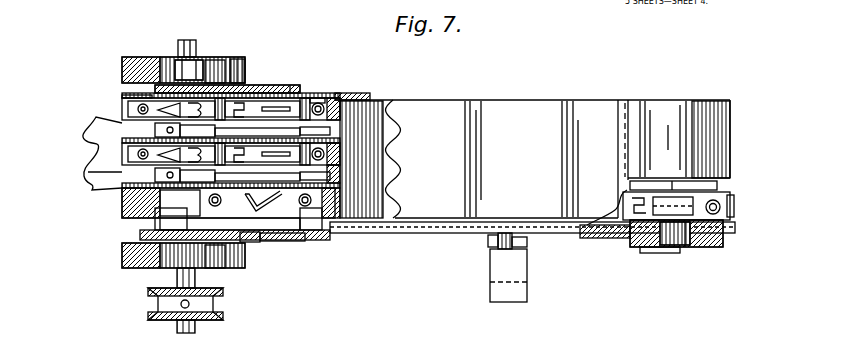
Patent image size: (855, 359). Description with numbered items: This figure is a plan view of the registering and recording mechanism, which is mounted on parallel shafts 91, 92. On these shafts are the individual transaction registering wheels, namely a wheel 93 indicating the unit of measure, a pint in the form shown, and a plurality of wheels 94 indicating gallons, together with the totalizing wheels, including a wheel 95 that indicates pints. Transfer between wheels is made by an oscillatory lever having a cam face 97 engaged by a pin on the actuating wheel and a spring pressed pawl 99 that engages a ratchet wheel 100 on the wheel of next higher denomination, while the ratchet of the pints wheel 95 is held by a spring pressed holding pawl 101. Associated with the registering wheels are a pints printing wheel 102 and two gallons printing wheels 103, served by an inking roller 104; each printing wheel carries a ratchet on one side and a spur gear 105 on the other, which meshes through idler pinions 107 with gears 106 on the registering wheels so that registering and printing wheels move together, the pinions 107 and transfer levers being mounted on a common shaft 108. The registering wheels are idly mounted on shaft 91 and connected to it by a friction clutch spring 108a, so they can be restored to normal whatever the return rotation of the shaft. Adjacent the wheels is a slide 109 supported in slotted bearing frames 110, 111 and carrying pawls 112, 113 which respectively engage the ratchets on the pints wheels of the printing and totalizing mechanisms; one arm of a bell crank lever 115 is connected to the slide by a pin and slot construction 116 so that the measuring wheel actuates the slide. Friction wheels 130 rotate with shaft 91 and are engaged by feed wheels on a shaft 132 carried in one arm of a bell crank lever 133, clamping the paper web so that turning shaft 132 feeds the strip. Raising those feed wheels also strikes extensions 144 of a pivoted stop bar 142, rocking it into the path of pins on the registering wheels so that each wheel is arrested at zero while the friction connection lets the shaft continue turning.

The friction wheels 130 is at (124, 57).
The shaft 132 is at (180, 50).
The oscillatory stop bar 142 is at (202, 58).
The extensions 144 is at (248, 49).
The shaft 108 is at (250, 60).
The idler pinions 107 is at (258, 86).
The cam face 97 is at (292, 86).
The spring pressed pawl 99 is at (312, 93).
The ratchet wheel 100 is at (330, 93).
The gallons printing wheels 103 is at (341, 95).
The spur gear 105 is at (122, 100).
The inking roller 104 is at (435, 87).
The shaft 91 is at (160, 88).
The wheels 94 is at (122, 112).
The bell crank lever 133 is at (90, 143).
The gears 106 is at (86, 172).
The wheel 93 is at (122, 214).
The spring 108a is at (142, 222).
The bearing frame 110 is at (270, 232).
The pawl 112 is at (284, 236).
The pints printing wheel 102 is at (318, 222).
The slide 109 is at (438, 230).
The pin and slot construction 116 is at (490, 246).
The bell crank lever 115 is at (506, 290).
The bearing frame 111 is at (580, 238).
The pawl 113 is at (670, 242).
The shaft 92 is at (686, 240).
The spring pressed holding pawl 101 is at (722, 226).
The wheel 95 is at (732, 216).